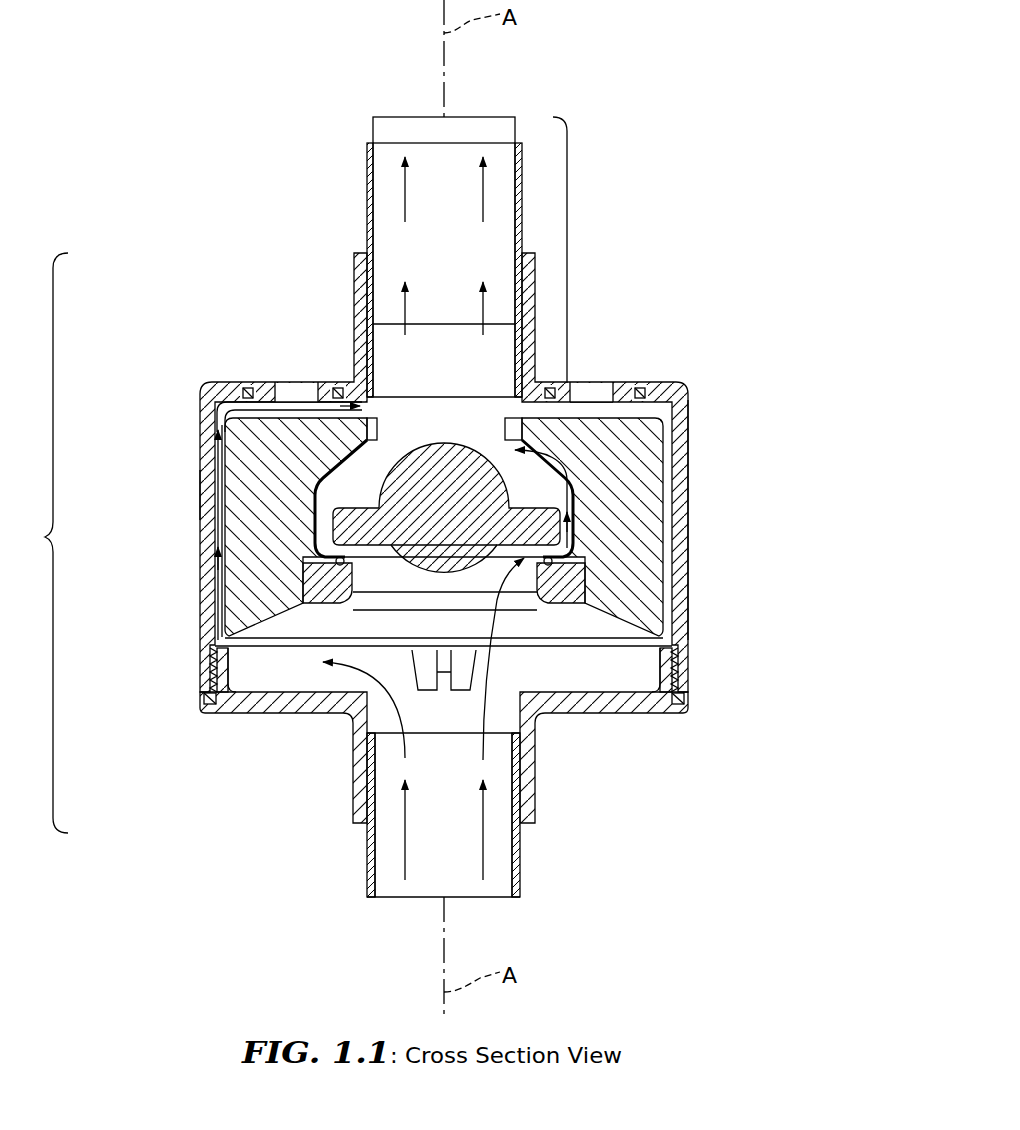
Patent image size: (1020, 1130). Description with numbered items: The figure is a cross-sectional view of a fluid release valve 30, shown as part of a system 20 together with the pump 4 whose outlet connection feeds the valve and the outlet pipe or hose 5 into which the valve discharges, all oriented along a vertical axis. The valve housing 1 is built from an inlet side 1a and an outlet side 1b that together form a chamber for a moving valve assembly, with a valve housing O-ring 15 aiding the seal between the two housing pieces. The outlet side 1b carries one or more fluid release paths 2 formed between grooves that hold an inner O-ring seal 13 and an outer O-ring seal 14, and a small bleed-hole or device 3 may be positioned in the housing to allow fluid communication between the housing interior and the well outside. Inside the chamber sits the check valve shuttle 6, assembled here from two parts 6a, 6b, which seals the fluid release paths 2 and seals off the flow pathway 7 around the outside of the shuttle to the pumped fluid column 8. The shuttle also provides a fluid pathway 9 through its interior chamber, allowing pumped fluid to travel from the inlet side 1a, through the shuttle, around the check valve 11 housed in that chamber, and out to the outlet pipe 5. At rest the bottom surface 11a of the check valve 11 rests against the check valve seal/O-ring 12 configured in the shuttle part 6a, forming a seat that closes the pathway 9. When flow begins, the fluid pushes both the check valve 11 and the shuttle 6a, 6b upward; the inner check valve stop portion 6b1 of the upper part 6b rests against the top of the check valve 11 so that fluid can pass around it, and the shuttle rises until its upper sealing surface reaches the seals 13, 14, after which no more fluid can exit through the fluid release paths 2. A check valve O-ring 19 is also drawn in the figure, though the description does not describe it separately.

The system 20 is at (185, 116).
The fluid release valve 30 is at (40, 543).
The valve housing 1 is at (689, 526).
The inlet side 1a is at (323, 702).
The outlet side 1b is at (207, 391).
The fluid release path 2 is at (717, 373).
The bleed-hole or device 3 is at (200, 493).
The pump 4 is at (520, 882).
The outlet pipe or hose 5 is at (367, 193).
The check valve shuttle 6 is at (233, 523).
The CV shuttle part 6a is at (585, 565).
The CV shuttle part 6b is at (652, 585).
The inner check valve stop portion 6b1 is at (357, 473).
The flow pathway around the CV shuttle 7 is at (402, 172).
The pumped fluid column 8 is at (567, 258).
The fluid pathway through the CV shuttle 9 is at (486, 192).
The check valve 11 is at (428, 467).
The bottom surface of the check valve 11a is at (350, 570).
The check valve seal/O-ring 12 is at (597, 388).
The inner O-ring seal 13 is at (553, 392).
The outer O-ring seal 14 is at (645, 397).
The valve housing O-ring 15 is at (688, 705).
The check valve O-ring 19 is at (587, 583).